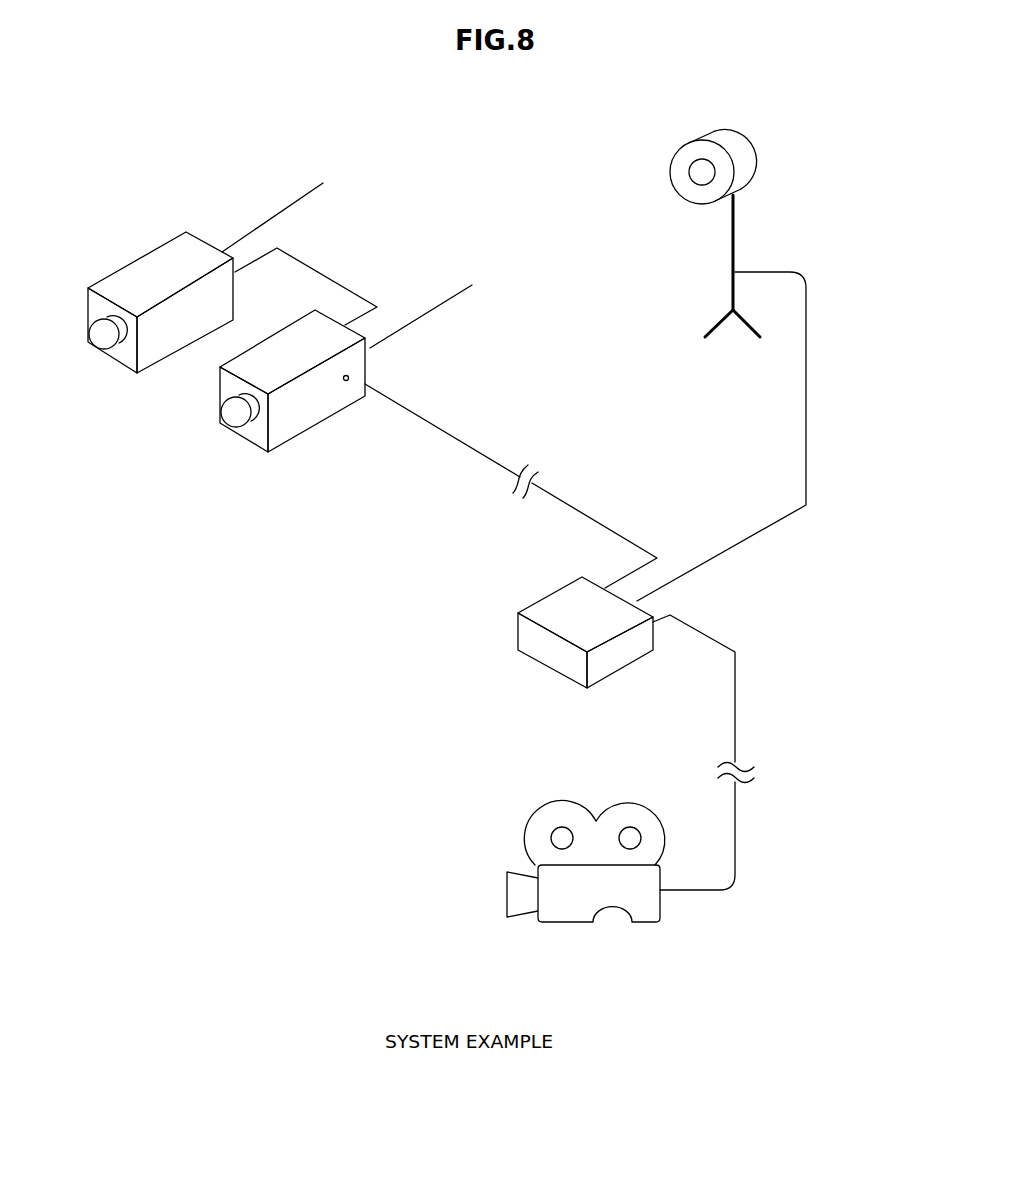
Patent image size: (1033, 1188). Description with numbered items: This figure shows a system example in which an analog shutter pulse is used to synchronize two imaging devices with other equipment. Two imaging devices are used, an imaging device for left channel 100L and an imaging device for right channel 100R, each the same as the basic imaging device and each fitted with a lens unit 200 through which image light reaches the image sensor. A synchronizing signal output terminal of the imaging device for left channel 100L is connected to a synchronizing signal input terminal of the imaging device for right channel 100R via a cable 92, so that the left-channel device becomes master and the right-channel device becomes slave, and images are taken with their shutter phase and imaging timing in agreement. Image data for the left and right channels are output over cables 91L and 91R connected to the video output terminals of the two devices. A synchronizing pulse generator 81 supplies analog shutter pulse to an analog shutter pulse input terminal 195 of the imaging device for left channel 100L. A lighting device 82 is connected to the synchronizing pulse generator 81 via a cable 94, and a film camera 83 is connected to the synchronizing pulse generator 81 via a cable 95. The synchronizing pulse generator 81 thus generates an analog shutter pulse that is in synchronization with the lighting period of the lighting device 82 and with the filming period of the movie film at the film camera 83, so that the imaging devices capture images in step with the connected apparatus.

The imaging device for right channel 100R is at (122, 266).
The imaging device for left channel 100L is at (308, 430).
The lens unit 200 is at (105, 343).
The cable 91R is at (278, 210).
The cable 91L is at (427, 311).
The cable 92 is at (327, 273).
The analog shutter pulse input terminal 195 is at (351, 375).
The synchronizing pulse generator 81 is at (517, 634).
The lighting device 82 is at (743, 134).
The film camera 83 is at (575, 924).
The cable 94 is at (808, 388).
The cable 95 is at (716, 641).